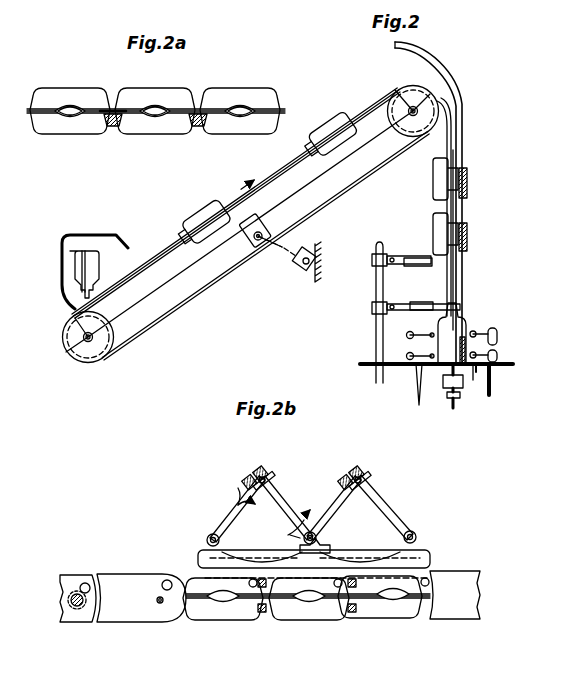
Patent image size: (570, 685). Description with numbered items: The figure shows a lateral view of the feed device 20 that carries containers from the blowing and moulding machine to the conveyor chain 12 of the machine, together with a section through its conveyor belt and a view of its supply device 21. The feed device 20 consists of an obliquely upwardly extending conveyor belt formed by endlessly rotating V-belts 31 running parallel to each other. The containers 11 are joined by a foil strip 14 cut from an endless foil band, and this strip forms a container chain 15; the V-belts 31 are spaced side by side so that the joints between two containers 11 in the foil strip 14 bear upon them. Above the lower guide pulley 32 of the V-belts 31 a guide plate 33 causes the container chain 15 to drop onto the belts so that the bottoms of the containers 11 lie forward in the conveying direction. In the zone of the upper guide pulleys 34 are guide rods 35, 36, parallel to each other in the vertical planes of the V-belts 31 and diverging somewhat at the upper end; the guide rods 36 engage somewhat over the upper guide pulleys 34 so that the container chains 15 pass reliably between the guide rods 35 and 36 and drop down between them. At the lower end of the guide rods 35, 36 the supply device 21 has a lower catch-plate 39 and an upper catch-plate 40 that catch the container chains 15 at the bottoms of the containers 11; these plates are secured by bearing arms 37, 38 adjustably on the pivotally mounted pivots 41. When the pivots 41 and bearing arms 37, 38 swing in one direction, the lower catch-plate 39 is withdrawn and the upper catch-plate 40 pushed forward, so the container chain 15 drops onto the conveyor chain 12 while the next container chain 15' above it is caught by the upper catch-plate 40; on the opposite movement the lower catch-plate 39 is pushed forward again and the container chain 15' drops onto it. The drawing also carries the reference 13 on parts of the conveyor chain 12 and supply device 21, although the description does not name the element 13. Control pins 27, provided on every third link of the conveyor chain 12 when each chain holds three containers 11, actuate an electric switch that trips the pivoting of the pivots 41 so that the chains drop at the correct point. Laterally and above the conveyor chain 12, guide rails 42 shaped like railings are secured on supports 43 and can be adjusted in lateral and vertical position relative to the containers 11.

In FIG. 2A, the containers 11 is at (70, 132).
In FIG. 2, the containers 11 is at (436, 196).
In FIG. 2B, the containers 11 is at (232, 612).
In FIG. 2, the conveyor chain 12 is at (464, 400).
In FIG. 2B, the conveyor chain 12 is at (190, 622).
In FIG. 2, the pin / base plate 13 is at (468, 340).
In FIG. 2B, the pin / base plate 13 is at (253, 569).
In FIG. 2A, the foil strip 14 is at (110, 106).
In FIG. 2, the foil strip 14 is at (80, 272).
In FIG. 2A, the container chain 15 is at (163, 87).
In FIG. 2, the container chain 15 is at (300, 220).
In FIG. 2B, the container chain 15 is at (411, 633).
In FIG. 2, the next container chain 15' is at (485, 209).
In FIG. 2, the feed device 20 is at (240, 190).
In FIG. 2, the supply device 21 is at (372, 292).
In FIG. 2, the control pins 27 is at (455, 402).
In FIG. 2B, the control pins 27 is at (84, 612).
In FIG. 2A, the V-belts 31 is at (116, 128).
In FIG. 2, the V-belts 31 is at (186, 303).
In FIG. 2, the lower guide pulley 32 is at (88, 352).
In FIG. 2, the guide plate 33 is at (62, 235).
In FIG. 2, the upper guide pulleys 34 is at (412, 128).
In FIG. 2, the guide rods 35 is at (450, 130).
In FIG. 2B, the guide rods 35 is at (268, 612).
In FIG. 2, the guide rods 36 is at (462, 82).
In FIG. 2B, the guide rods 36 is at (354, 612).
In FIG. 2, the bearing arm 37 is at (402, 310).
In FIG. 2B, the bearing arm 37 is at (226, 520).
In FIG. 2, the bearing arm 38 is at (392, 256).
In FIG. 2B, the bearing arm 38 is at (280, 499).
In FIG. 2, the lower catch-plate 39 is at (433, 303).
In FIG. 2B, the lower catch-plate 39 is at (296, 548).
In FIG. 2, the upper catch-plate 40 is at (422, 257).
In FIG. 2B, the upper catch-plate 40 is at (420, 556).
In FIG. 2, the pivots 41 is at (372, 246).
In FIG. 2B, the pivots 41 is at (276, 479).
In FIG. 2, the guide rails 42 is at (497, 352).
In FIG. 2, the supports 43 is at (480, 345).